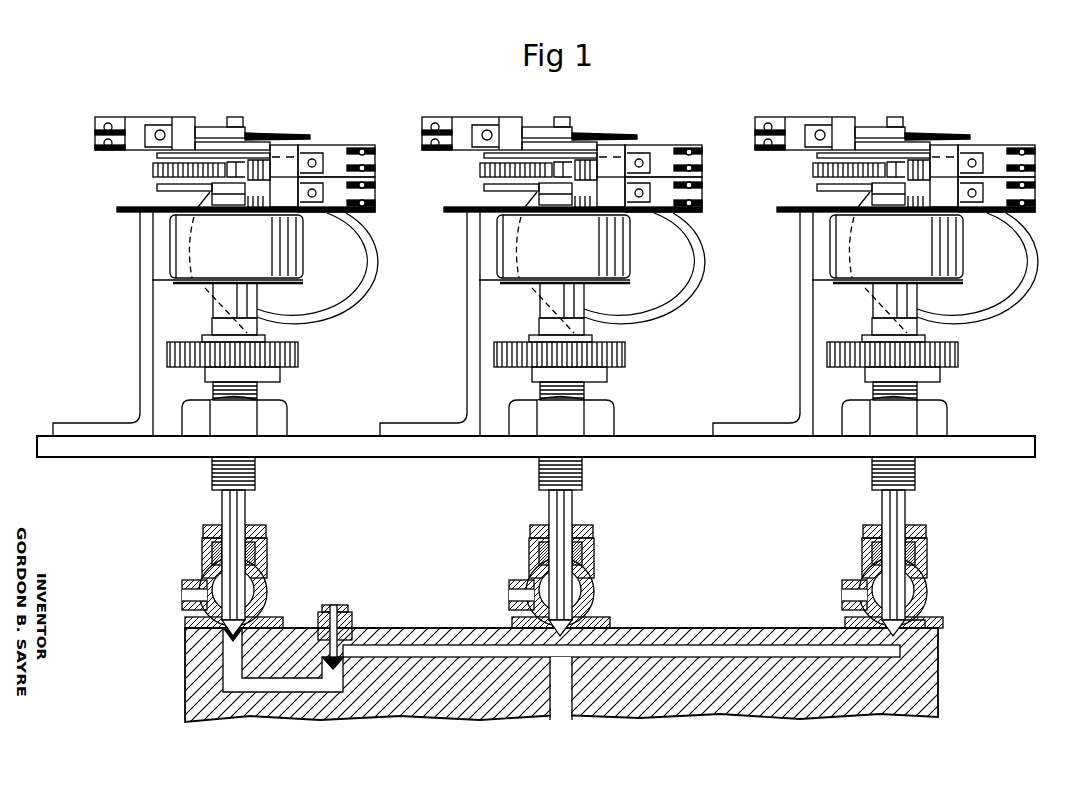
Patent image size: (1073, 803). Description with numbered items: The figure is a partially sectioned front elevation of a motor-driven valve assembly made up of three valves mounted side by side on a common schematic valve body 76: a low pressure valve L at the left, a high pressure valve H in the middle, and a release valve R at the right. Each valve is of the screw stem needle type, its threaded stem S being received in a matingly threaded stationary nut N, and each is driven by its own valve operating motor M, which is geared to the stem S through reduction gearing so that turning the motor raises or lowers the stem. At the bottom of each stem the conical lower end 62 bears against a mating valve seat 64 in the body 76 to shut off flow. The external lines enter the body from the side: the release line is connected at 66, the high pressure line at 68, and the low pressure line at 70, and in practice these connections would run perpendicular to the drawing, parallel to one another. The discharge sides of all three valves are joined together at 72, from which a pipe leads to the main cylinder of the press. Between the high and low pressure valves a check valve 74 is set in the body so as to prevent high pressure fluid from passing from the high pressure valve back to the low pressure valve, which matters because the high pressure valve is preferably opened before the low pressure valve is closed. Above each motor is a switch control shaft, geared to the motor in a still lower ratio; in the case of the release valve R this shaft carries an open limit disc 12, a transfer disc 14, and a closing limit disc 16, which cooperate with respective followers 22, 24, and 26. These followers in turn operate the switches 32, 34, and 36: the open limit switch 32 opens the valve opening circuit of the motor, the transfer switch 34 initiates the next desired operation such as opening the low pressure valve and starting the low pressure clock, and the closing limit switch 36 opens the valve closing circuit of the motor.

The open limit disc 12 is at (963, 133).
The transfer disc 14 is at (817, 156).
The closing limit disc 16 is at (817, 187).
The follower 22 is at (867, 128).
The follower 24 is at (915, 150).
The follower 26 is at (902, 194).
The open limit switch 32 is at (793, 122).
The transfer switch 34 is at (993, 150).
The closing limit switch 36 is at (998, 200).
The conical lower end 62 is at (897, 632).
The valve seat 64 is at (923, 622).
The release line connection 66 is at (842, 595).
The high pressure line connection 68 is at (513, 595).
The low pressure line connection 70 is at (183, 597).
The discharge connection 72 is at (557, 710).
The check valve 74 is at (303, 627).
The valve body 76 is at (718, 700).
The valve operating motor M is at (368, 280).
The stationary nut N is at (287, 418).
The threaded stem S is at (257, 478).
The low pressure valve L is at (237, 563).
The high pressure valve H is at (566, 563).
The release valve R is at (896, 563).